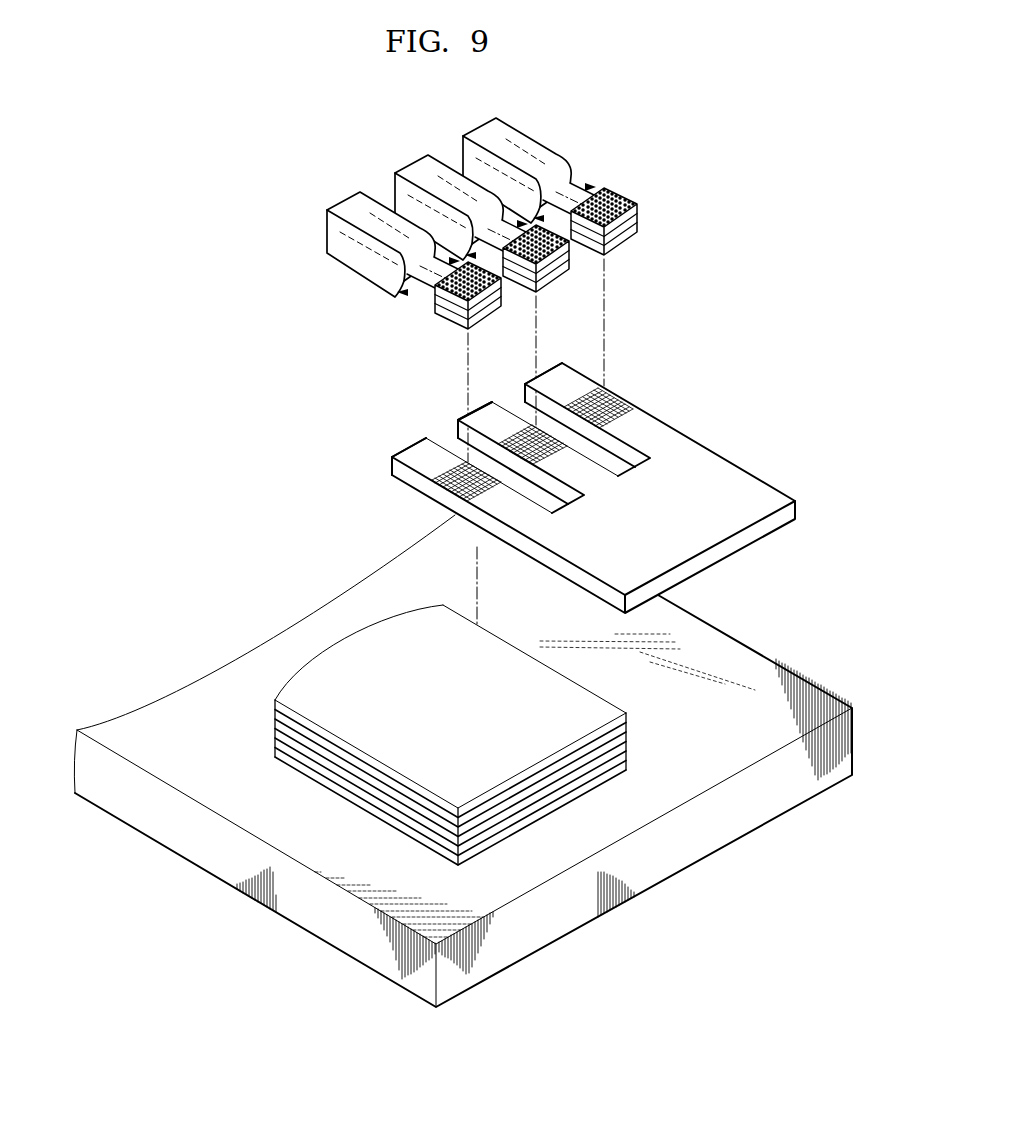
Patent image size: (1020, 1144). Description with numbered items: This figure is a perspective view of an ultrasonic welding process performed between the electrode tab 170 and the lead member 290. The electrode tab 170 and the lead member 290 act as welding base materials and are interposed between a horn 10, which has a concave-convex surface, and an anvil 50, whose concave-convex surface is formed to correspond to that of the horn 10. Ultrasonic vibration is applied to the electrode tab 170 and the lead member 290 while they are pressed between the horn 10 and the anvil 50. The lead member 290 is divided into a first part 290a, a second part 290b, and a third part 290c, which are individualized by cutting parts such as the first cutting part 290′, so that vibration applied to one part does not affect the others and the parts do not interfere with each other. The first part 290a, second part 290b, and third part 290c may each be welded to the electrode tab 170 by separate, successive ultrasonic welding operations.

The horn 10 is at (633, 193).
The anvil 50 is at (757, 665).
The electrode tab 170 is at (358, 690).
The lead member 290 is at (728, 470).
The first part 290a is at (412, 455).
The second part 290b is at (488, 408).
The third part 290c is at (589, 383).
The first cutting part 290′ is at (458, 455).